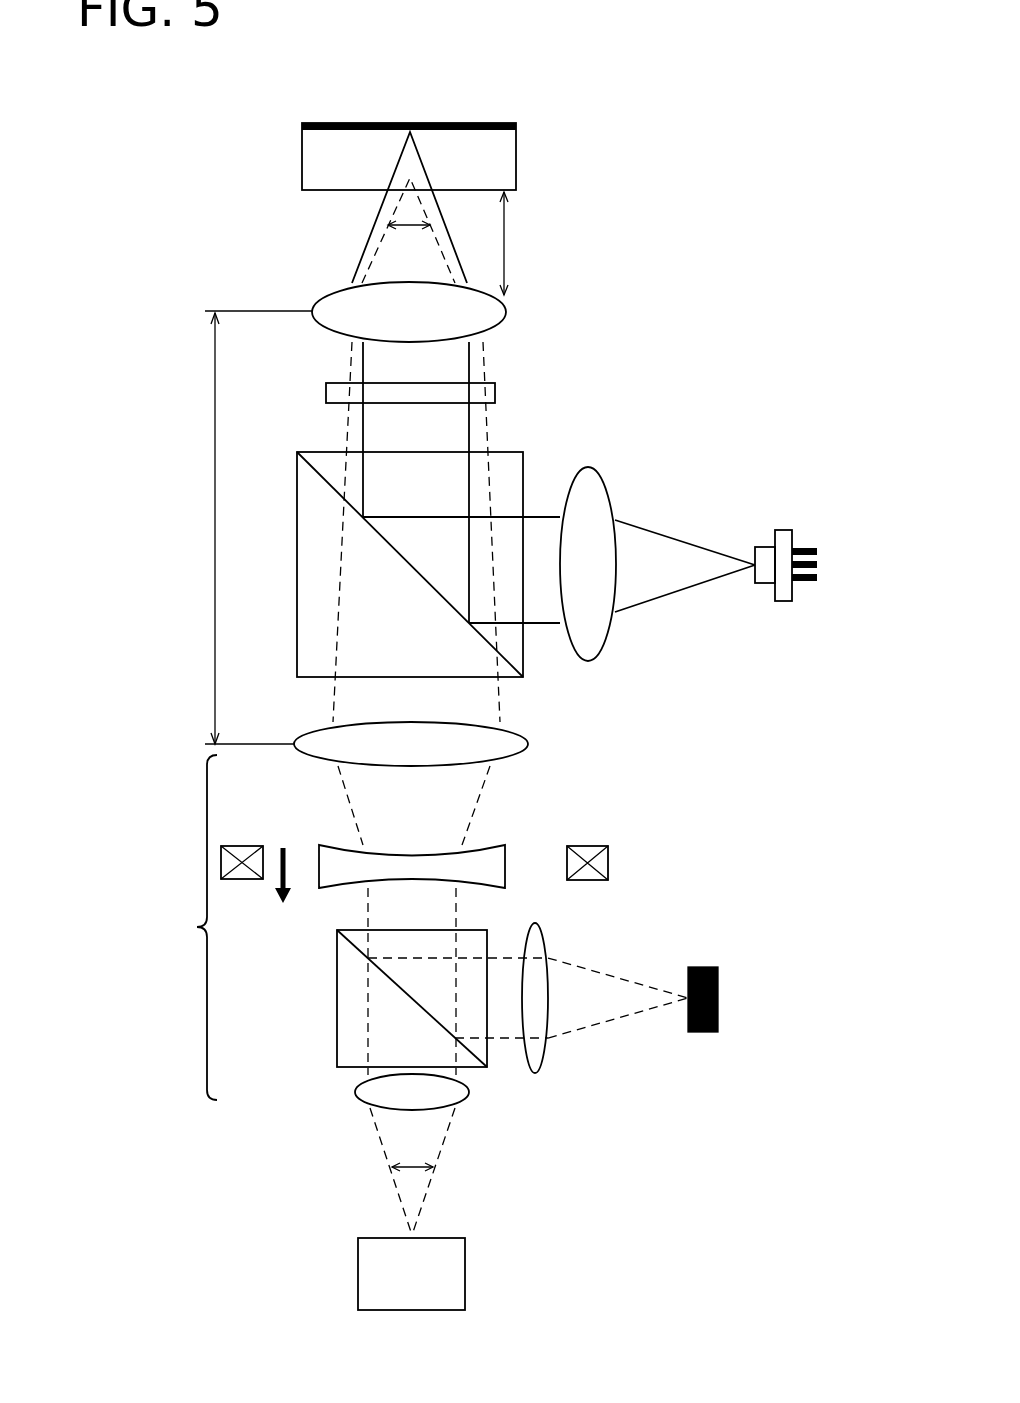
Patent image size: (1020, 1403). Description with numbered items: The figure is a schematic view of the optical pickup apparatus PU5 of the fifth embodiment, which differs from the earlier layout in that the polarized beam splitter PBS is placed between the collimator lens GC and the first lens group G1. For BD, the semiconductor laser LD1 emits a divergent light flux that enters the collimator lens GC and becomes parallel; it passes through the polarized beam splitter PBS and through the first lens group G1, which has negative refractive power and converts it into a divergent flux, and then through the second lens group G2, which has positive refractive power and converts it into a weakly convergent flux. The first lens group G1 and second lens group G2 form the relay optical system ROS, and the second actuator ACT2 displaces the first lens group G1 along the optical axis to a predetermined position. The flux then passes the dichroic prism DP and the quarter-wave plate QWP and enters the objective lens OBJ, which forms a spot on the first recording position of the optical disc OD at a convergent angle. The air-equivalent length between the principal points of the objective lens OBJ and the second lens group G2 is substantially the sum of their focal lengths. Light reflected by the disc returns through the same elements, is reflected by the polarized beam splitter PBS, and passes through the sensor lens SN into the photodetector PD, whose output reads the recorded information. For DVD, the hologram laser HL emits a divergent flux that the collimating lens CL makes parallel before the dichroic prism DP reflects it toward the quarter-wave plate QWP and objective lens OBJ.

The optical pickup apparatus PU5 is at (778, 217).
The optical disc OD is at (516, 170).
The objective lens OBJ is at (506, 312).
The quarter-wave plate QWP is at (495, 393).
The dichroic prism DP is at (523, 677).
The collimating lens CL is at (590, 467).
The hologram laser HL is at (785, 530).
The second lens group G2 is at (520, 757).
The first lens group G1 is at (505, 877).
The second actuator ACT2 is at (608, 855).
The polarized beam splitter PBS is at (337, 985).
The sensor lens SN is at (540, 1068).
The photodetector PD is at (718, 985).
The collimator lens GC is at (468, 1095).
The semiconductor laser LD1 is at (465, 1270).
The relay optical system ROS is at (168, 927).